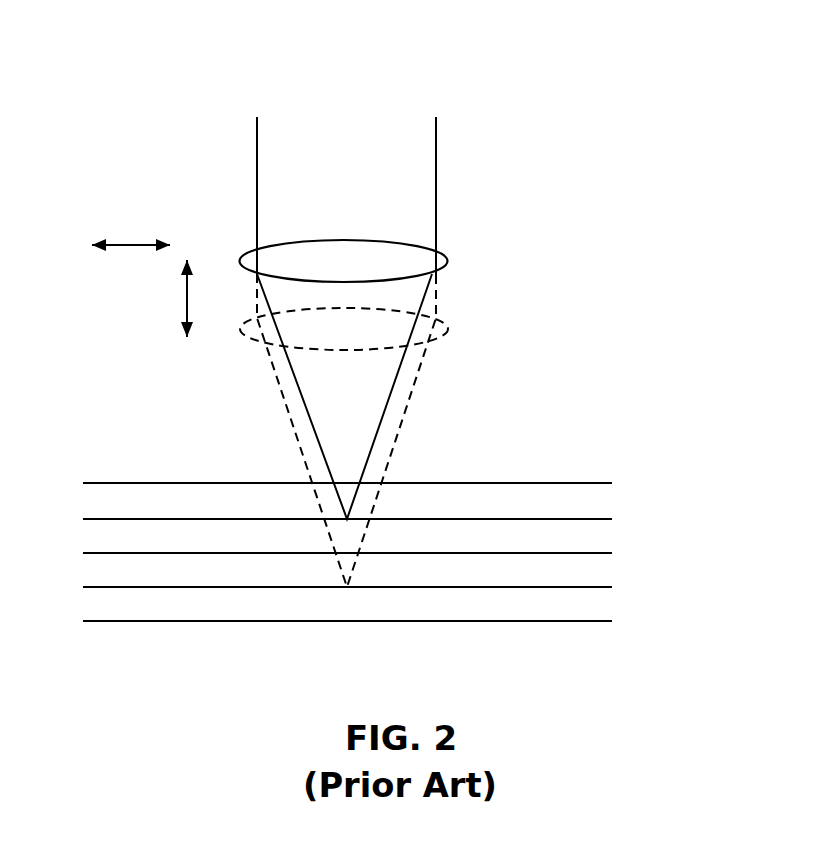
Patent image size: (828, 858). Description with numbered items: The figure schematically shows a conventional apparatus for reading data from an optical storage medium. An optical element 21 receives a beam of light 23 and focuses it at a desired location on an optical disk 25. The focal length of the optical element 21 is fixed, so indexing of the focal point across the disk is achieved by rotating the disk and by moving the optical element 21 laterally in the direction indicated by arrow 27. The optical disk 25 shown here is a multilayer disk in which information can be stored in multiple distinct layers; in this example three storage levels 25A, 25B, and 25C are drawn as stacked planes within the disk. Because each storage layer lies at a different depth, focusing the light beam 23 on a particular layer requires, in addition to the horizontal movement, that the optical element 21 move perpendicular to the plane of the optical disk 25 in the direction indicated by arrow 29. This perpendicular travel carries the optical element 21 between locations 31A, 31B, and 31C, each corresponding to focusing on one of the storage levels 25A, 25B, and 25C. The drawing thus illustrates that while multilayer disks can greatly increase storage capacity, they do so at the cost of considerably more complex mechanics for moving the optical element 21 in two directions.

The optical element 21 is at (400, 258).
The beam of light 23 is at (460, 135).
The optical disk 25 is at (383, 507).
The storage level 25A is at (382, 518).
The storage level 25B is at (382, 553).
The storage level 25C is at (383, 588).
The arrow 27 is at (123, 243).
The arrow 29 is at (185, 310).
The location 31A is at (461, 260).
The location 31B is at (461, 294).
The location 31C is at (461, 329).